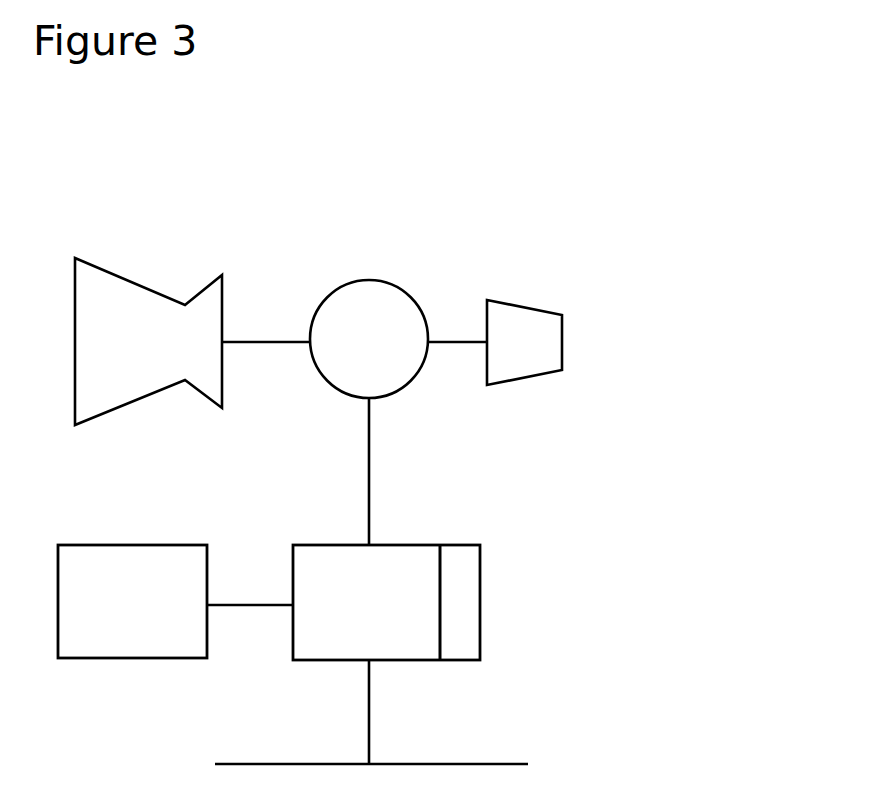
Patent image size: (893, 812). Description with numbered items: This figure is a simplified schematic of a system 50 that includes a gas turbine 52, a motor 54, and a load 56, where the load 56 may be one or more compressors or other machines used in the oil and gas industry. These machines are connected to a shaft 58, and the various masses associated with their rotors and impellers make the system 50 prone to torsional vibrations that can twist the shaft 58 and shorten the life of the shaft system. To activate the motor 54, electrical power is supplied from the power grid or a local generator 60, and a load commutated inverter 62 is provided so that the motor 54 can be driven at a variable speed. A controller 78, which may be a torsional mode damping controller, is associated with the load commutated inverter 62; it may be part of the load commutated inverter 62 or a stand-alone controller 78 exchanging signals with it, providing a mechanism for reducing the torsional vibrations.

The system 50 is at (398, 170).
The gas turbine 52 is at (122, 408).
The motor 54 is at (398, 392).
The load 56 is at (530, 378).
The shaft 58 is at (263, 342).
The power grid or local generator 60 is at (470, 764).
The load commutated inverter (LCI) 62 is at (398, 545).
The controller 78 is at (157, 658).